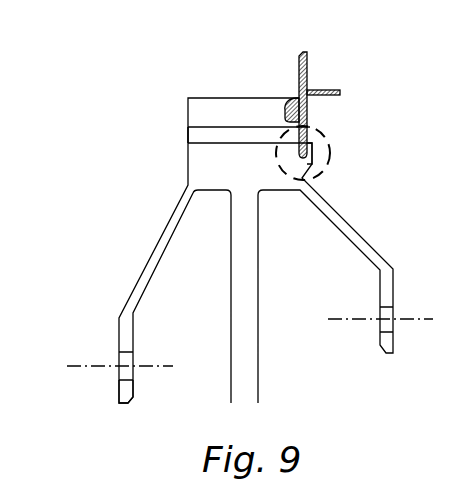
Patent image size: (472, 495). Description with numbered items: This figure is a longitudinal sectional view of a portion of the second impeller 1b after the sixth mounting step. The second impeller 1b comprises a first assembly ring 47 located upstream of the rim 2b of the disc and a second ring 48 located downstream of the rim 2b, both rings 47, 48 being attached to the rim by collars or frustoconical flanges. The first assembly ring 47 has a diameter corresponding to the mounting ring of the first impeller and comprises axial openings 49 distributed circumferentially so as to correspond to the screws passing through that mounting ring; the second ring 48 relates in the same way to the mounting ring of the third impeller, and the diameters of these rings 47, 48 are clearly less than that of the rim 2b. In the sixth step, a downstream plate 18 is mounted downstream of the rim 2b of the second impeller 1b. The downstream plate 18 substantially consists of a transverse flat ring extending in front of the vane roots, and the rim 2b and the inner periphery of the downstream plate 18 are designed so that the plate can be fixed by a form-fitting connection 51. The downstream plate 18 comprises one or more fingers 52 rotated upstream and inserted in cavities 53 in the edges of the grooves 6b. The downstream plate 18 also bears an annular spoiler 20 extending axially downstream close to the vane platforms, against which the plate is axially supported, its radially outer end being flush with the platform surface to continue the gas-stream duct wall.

The second impeller 1b is at (215, 66).
The rim of the disc 2b is at (218, 158).
The grooves 6b is at (198, 132).
The downstream plate 18 is at (323, 58).
The annular spoiler 20 is at (338, 90).
The first assembly ring 47 is at (127, 390).
The second ring 48 is at (388, 338).
The axial openings 49 is at (112, 362).
The form-fitting connection 51 is at (329, 149).
The fingers 52 is at (303, 120).
The cavities 53 is at (298, 97).